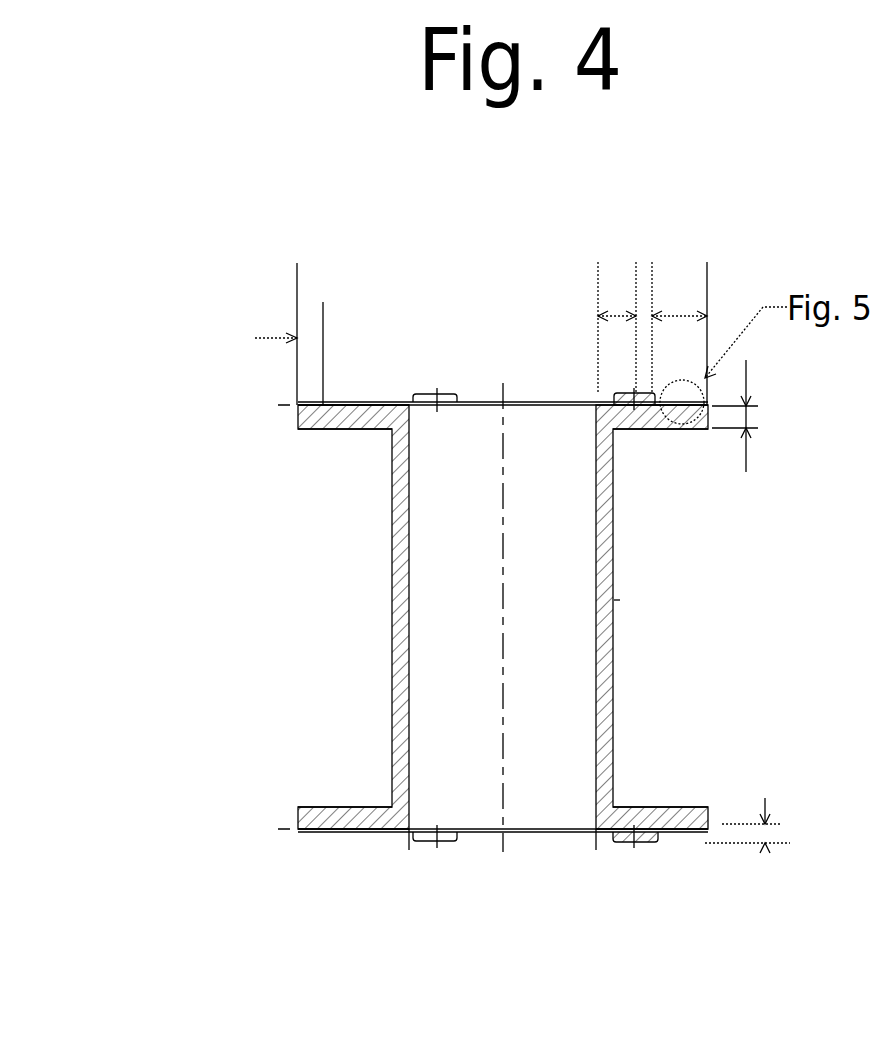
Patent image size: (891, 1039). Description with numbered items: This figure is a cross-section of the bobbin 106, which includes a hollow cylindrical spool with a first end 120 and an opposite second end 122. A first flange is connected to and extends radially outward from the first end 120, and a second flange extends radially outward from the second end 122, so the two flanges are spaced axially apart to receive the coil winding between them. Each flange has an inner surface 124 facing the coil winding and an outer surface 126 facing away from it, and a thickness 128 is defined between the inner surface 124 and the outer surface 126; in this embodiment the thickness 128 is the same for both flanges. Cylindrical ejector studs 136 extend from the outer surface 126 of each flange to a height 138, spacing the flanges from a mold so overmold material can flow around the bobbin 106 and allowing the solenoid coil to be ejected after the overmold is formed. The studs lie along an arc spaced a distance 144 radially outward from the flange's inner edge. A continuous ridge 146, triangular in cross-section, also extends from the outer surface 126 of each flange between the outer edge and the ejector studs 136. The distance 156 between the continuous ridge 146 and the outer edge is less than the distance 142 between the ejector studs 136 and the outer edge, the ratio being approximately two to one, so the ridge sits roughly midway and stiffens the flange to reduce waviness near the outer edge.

The bobbin 106 is at (212, 418).
The first end 120 is at (615, 430).
The second end 122 is at (392, 805).
The inner surface 124 is at (310, 428).
The outer surface 126 is at (297, 400).
The thickness 128 is at (746, 472).
The ejector studs 136 is at (612, 393).
The height 138 is at (765, 843).
The distance 142 is at (668, 316).
The distance 144 is at (620, 316).
The continuous ridge 146 is at (324, 403).
The distance 156 is at (323, 338).